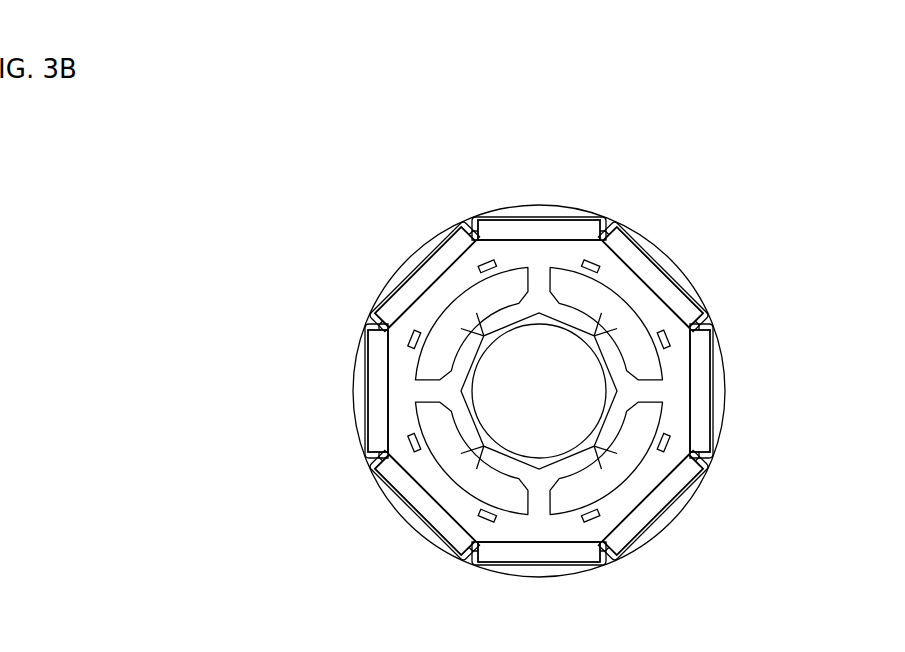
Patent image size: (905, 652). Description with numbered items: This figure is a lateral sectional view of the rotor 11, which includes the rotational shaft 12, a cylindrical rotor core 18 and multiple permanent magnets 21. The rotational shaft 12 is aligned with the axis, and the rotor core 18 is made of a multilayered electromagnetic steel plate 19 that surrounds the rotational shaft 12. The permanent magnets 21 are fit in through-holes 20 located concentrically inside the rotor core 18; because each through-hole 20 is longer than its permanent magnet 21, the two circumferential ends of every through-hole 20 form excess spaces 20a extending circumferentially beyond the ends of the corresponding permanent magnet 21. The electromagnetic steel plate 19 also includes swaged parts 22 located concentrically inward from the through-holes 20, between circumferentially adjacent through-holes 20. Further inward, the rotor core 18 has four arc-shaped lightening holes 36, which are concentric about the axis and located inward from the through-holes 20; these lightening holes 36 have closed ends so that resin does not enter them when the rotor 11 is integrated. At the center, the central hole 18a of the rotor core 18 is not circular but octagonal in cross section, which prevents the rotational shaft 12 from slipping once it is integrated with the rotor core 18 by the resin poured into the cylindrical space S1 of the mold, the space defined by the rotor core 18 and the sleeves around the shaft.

The rotor 11 is at (690, 232).
The rotational shaft 12 is at (660, 280).
The rotor core 18 is at (703, 290).
The central hole 18a is at (583, 360).
The electromagnetic steel plate 19 is at (673, 368).
The through-hole 20 is at (555, 218).
The excess space 20a is at (468, 290).
The permanent magnet 21 is at (498, 219).
The swaged part 22 is at (592, 262).
The lightening hole 36 is at (437, 290).
The cylindrical space S1 is at (447, 388).